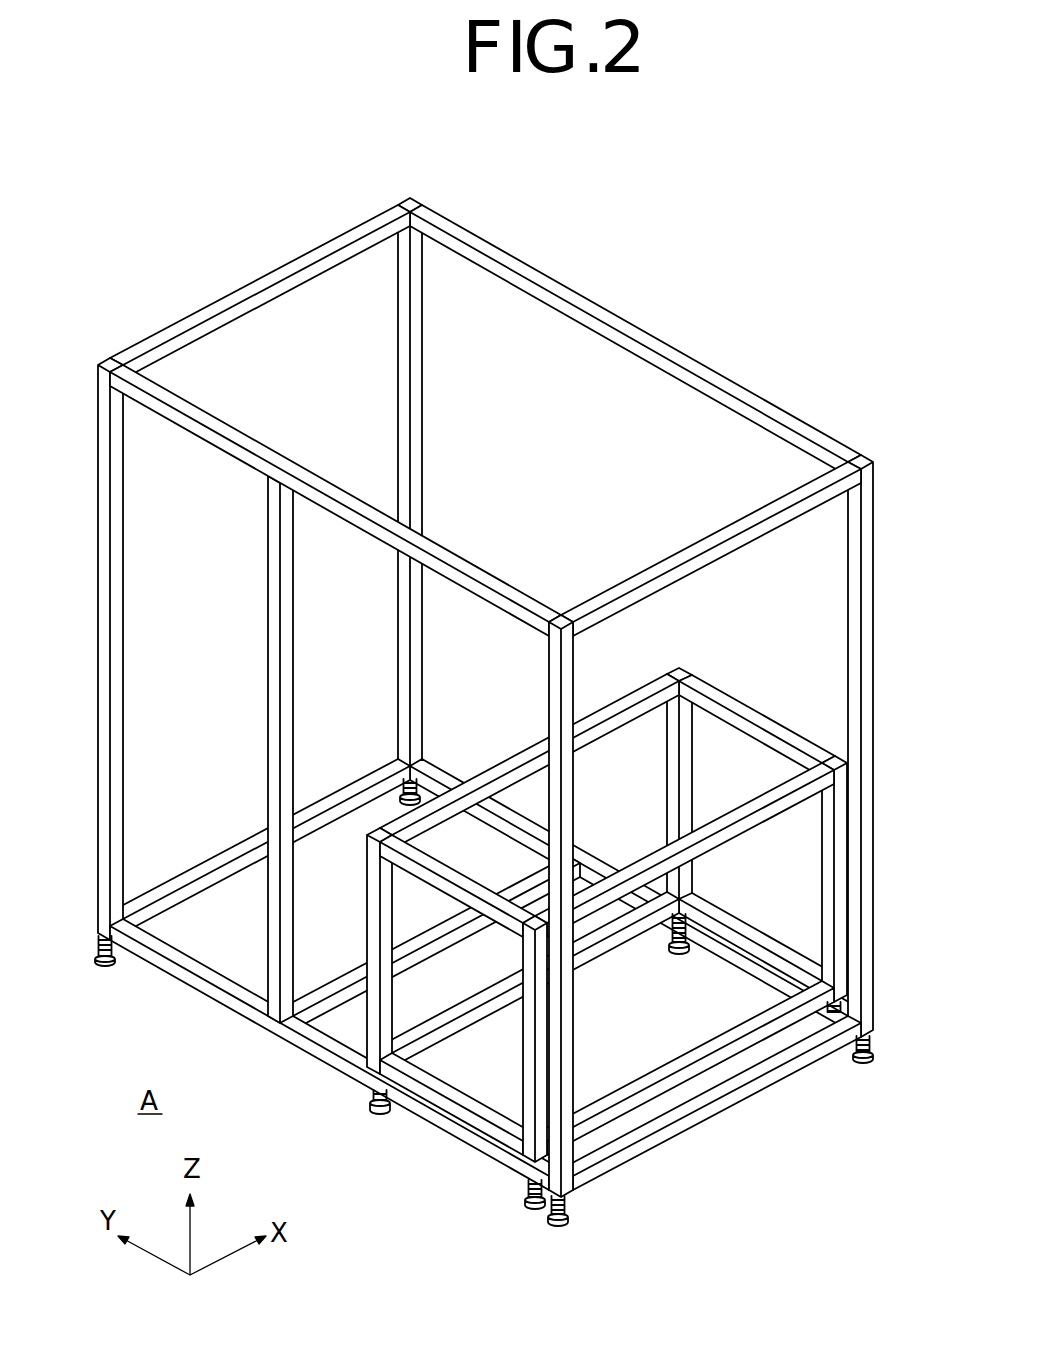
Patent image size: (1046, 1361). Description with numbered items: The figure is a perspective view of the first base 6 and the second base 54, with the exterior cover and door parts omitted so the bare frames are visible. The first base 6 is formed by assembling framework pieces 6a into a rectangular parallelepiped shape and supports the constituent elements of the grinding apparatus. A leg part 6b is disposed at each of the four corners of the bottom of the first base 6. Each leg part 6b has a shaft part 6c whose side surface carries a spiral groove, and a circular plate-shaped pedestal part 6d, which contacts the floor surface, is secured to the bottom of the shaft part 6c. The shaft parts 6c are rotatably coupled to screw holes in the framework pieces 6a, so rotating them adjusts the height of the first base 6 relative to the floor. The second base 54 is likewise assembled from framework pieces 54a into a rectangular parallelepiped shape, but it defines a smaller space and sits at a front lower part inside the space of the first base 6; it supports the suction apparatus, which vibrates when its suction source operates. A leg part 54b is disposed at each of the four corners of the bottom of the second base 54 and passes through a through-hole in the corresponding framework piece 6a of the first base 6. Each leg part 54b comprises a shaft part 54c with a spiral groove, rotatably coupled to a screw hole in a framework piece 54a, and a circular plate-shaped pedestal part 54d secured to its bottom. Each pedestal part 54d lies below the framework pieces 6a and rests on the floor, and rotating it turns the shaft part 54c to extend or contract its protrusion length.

The first base 6 is at (501, 708).
The framework pieces 6a is at (520, 708).
The leg part 6b is at (482, 1039).
The shaft part 6c is at (566, 1202).
The pedestal part 6d is at (603, 1255).
The second base 54 is at (621, 954).
The framework pieces 54a is at (407, 820).
The leg part 54b is at (584, 1107).
The shaft part 54c is at (527, 1190).
The pedestal part 54d is at (532, 1208).